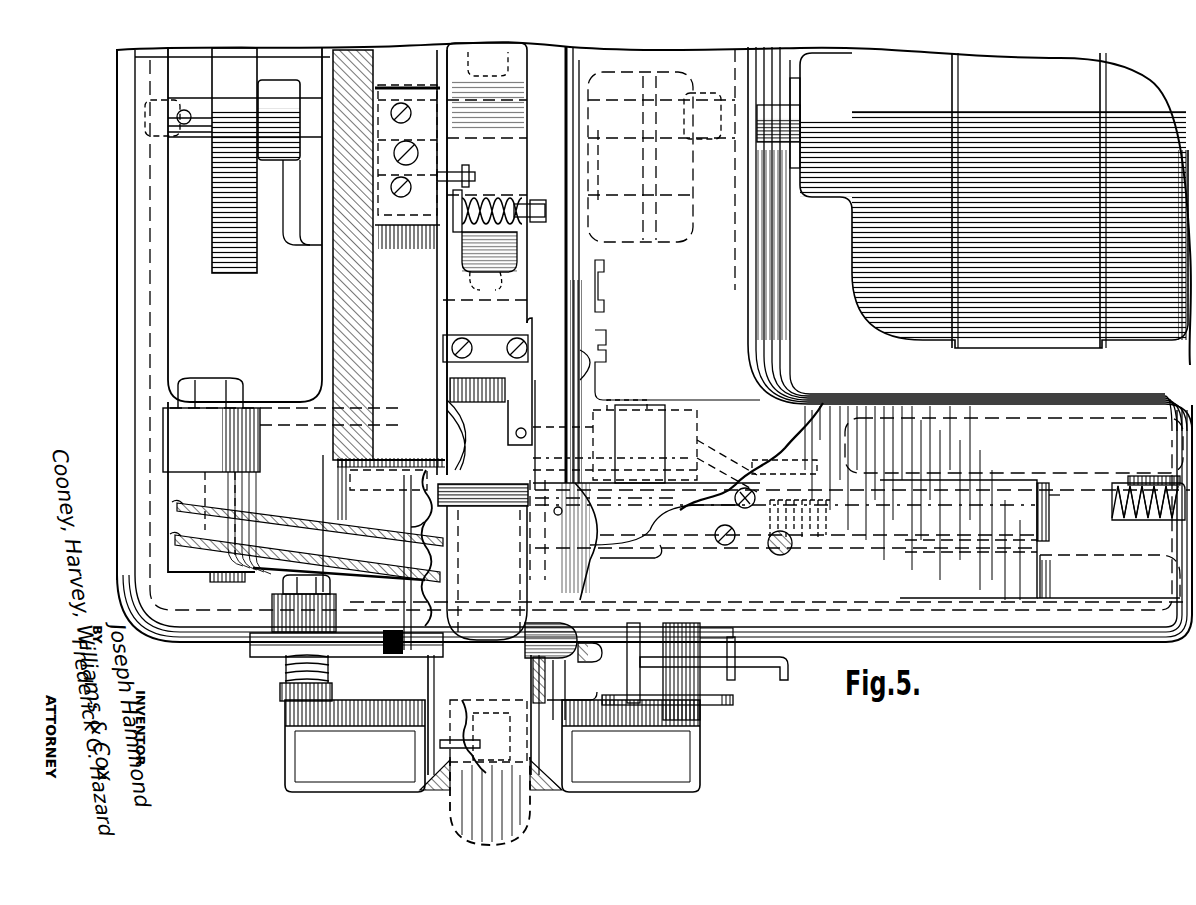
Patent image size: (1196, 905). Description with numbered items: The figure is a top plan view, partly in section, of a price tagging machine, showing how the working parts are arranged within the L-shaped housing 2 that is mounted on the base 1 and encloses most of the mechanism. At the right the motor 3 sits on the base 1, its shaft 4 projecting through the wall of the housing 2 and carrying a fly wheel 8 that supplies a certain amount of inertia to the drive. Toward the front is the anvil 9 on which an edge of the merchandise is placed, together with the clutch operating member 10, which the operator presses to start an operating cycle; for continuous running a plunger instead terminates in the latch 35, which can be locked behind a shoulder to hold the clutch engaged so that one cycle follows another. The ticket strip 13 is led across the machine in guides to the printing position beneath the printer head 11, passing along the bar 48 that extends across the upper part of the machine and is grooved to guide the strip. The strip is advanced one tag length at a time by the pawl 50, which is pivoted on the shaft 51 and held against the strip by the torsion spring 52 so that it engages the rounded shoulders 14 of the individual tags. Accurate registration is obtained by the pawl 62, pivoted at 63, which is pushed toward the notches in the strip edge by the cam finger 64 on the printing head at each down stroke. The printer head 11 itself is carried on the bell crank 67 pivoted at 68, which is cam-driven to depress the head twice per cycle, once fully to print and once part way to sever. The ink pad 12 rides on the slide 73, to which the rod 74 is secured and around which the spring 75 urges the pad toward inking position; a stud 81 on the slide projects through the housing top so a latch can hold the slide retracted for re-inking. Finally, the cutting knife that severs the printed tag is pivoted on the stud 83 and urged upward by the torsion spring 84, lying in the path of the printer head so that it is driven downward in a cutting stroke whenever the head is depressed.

The base 1 is at (117, 228).
The housing 2 is at (1018, 623).
The motor 3 is at (994, 200).
The shaft 4 is at (768, 128).
The fly wheel 8 is at (234, 273).
The anvil 9 is at (448, 790).
The clutch operating member 10 is at (716, 707).
The printer head 11 is at (405, 515).
The ink pad 12 is at (507, 506).
The ticket strip 13 is at (487, 573).
The rounded shoulders 14 is at (525, 430).
The latch 35 is at (787, 681).
The bar 48 is at (449, 392).
The pawl 50 is at (525, 390).
The shaft 51 is at (537, 204).
The torsion spring 52 is at (497, 205).
The pawl 62 is at (554, 647).
The pivot 63 is at (563, 511).
The cam finger 64 is at (592, 663).
The bell crank 67 is at (272, 520).
The pivot 68 is at (213, 582).
The slide 73 is at (1030, 539).
The rod 74 is at (1050, 525).
The spring 75 is at (1120, 512).
The stud 81 is at (782, 556).
The stud 83 is at (283, 698).
The torsion spring 84 is at (283, 670).